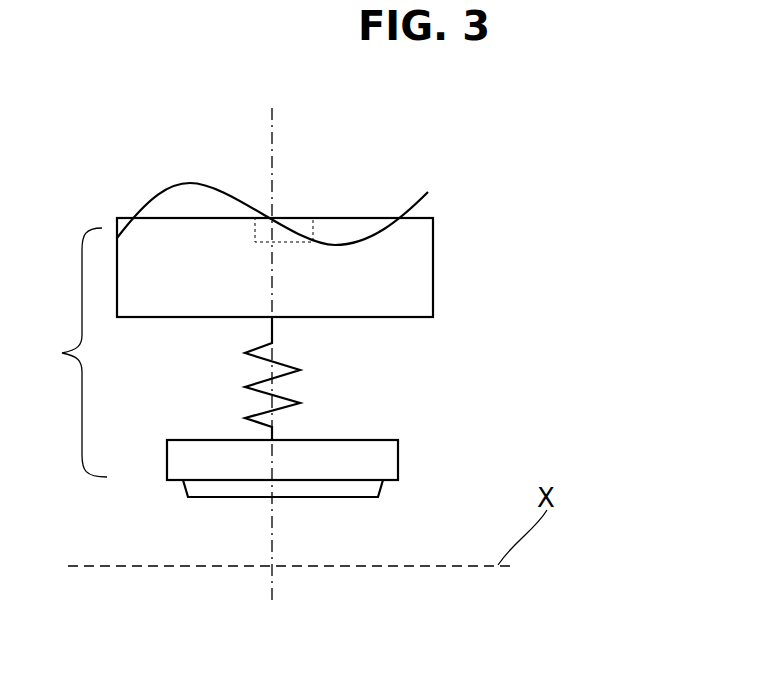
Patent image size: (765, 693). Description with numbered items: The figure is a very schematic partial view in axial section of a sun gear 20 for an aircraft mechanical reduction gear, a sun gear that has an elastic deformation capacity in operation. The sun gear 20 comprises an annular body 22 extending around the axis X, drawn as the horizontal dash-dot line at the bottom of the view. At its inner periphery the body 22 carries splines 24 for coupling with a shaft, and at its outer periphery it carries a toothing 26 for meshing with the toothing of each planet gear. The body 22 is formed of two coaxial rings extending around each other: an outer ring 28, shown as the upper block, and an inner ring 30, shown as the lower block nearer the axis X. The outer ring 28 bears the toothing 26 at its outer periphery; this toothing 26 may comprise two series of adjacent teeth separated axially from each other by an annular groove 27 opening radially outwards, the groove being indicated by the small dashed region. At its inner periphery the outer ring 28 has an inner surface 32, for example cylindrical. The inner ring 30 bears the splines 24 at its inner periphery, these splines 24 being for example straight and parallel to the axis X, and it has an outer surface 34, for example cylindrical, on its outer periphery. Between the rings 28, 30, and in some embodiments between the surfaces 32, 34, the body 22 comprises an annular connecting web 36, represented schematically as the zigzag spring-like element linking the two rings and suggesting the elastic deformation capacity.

The sun gear 20 is at (522, 240).
The annular body 22 is at (67, 352).
The splines 24 is at (325, 500).
The toothing 26 is at (188, 183).
The annular groove 27 is at (280, 228).
The outer ring 28 is at (420, 283).
The inner ring 30 is at (387, 458).
The inner surface 32 is at (400, 318).
The outer surface 34 is at (193, 438).
The annular connecting web 36 is at (293, 402).